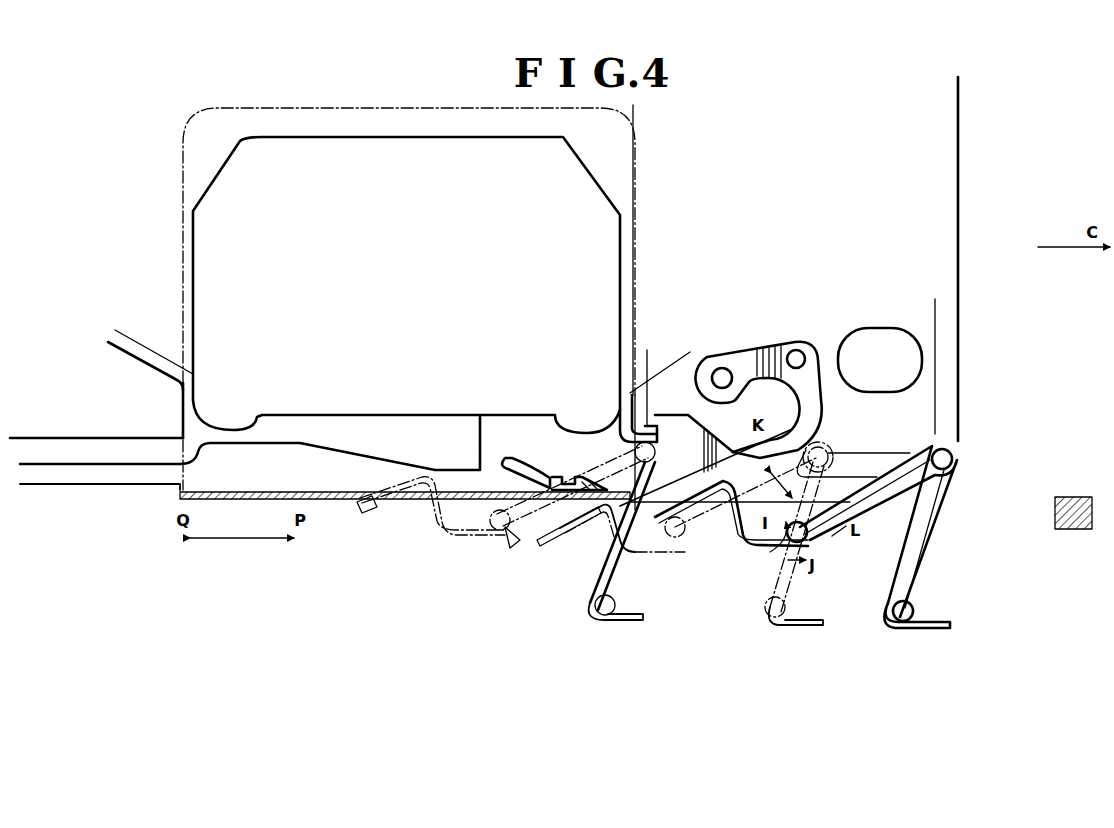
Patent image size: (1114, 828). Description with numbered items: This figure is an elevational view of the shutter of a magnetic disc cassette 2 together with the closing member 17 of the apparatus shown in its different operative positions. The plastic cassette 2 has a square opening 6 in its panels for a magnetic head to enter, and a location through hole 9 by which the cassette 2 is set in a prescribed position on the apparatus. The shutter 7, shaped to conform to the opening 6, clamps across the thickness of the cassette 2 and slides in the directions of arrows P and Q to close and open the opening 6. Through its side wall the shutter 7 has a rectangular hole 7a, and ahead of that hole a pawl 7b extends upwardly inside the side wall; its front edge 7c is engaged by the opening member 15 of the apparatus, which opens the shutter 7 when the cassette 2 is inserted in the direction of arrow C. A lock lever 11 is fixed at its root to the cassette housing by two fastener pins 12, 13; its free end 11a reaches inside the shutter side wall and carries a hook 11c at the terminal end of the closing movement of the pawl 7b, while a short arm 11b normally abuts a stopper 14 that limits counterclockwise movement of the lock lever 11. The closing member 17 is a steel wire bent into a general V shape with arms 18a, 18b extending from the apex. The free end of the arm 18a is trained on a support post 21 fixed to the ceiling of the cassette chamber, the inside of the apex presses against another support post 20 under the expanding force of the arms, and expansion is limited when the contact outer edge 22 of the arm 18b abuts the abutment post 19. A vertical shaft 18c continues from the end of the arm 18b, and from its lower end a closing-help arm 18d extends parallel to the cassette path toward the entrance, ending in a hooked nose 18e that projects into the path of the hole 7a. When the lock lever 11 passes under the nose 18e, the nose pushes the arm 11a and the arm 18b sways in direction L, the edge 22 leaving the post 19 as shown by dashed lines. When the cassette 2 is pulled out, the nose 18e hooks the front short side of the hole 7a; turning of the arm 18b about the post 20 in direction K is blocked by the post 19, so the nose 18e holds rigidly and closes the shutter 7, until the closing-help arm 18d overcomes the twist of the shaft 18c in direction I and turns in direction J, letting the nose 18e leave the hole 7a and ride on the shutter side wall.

The magnetic disc cassette 2 is at (960, 160).
The square opening 6 is at (612, 243).
The shutter 7 is at (618, 150).
The rectangular hole 7a is at (365, 513).
The pawl 7b is at (545, 542).
The front edge 7c is at (637, 275).
The location through hole 9 is at (886, 346).
The lock lever 11 is at (776, 462).
The free end arm 11a is at (540, 462).
The short arm 11b is at (660, 392).
The hook 11c is at (560, 475).
The fastener pin 12 is at (722, 368).
The fastener pin 13 is at (797, 350).
The stopper 14 is at (641, 425).
The opening member 15 is at (1080, 497).
The closing member 17 is at (686, 523).
The arm 18a is at (934, 528).
The arm 18b is at (880, 490).
The vertical shaft 18c is at (812, 542).
The closing-help arm 18d is at (755, 552).
The nose 18e is at (733, 480).
The abutment post 19 is at (808, 536).
The support post 20 is at (957, 446).
The support post 21 is at (916, 606).
The contact outer edge 22 is at (510, 542).